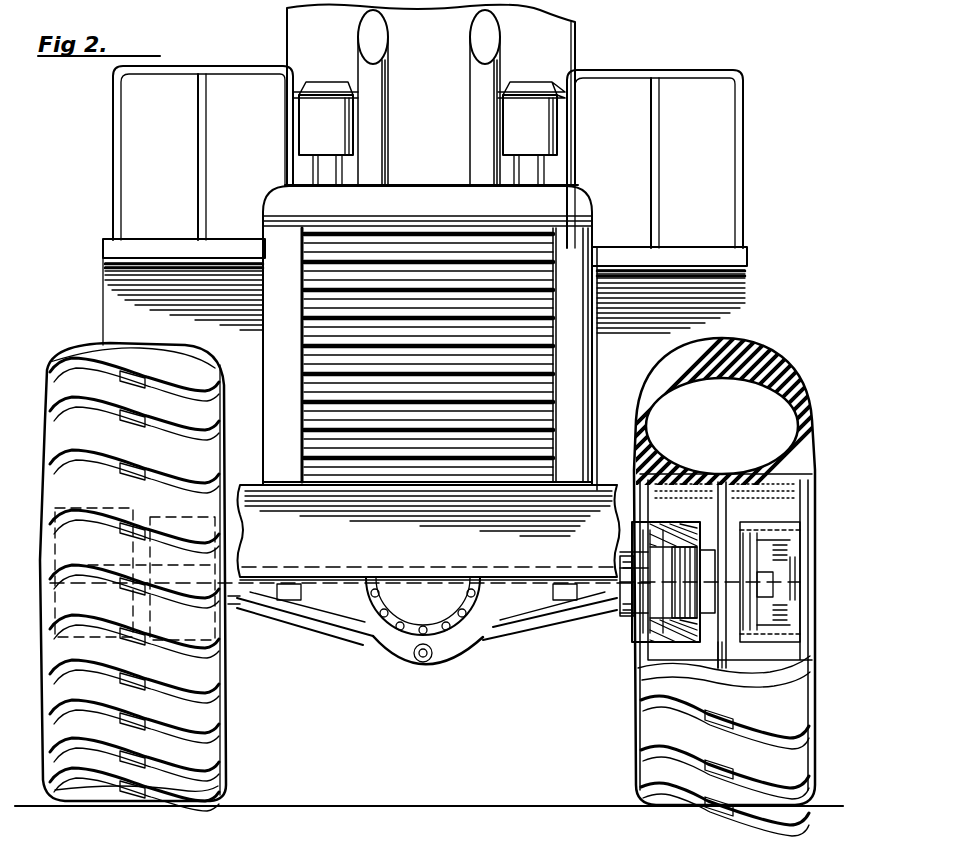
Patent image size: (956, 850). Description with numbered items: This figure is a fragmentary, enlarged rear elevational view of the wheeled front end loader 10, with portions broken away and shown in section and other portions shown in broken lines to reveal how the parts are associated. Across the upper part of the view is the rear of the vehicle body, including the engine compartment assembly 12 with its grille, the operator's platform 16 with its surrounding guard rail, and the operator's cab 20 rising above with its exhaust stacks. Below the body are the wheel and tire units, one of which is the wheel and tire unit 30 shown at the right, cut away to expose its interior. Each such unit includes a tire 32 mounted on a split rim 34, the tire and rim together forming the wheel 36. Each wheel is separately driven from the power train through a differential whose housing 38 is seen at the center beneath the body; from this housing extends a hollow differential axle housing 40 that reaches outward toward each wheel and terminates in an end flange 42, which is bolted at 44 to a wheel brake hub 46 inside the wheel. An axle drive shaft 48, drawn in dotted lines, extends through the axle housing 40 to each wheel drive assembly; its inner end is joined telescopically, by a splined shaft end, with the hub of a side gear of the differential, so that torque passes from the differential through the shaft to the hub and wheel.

The wheeled front end loader 10 is at (645, 46).
The engine compartment assembly 12 is at (578, 196).
The operator's platform 16 is at (713, 248).
The operator's cab 20 is at (592, 34).
The wheel and tire unit 30 is at (837, 331).
The tire 32 is at (757, 345).
The split rim 34 is at (812, 466).
The wheel 36 is at (839, 396).
The differential housing 38 is at (404, 609).
The differential axle housing 40 is at (571, 626).
The end flange 42 is at (620, 629).
The bolts 44 is at (637, 512).
The wheel brake hub 46 is at (652, 525).
The axle drive shaft 48 is at (316, 567).